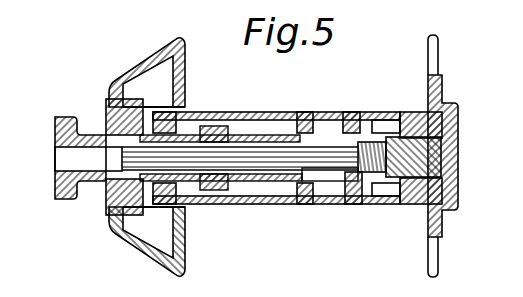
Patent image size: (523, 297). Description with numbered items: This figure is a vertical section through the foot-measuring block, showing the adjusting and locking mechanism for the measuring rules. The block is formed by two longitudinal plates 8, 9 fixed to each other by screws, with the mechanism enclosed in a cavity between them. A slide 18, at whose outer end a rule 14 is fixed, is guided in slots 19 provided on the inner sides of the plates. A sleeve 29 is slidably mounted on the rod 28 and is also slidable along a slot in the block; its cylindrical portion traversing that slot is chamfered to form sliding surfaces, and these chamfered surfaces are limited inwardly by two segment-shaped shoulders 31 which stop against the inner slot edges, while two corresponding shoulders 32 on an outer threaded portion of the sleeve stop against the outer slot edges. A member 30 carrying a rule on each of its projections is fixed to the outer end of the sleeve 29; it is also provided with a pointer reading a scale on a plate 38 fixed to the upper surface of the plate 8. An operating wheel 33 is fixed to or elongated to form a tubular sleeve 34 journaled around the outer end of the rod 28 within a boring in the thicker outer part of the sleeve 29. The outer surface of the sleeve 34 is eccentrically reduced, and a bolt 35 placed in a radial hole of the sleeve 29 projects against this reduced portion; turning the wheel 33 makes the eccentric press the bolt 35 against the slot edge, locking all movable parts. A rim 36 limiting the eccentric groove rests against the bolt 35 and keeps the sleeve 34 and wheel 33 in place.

The longitudinal plate 8 is at (273, 115).
The longitudinal plate 9 is at (301, 184).
The rule 14 is at (441, 253).
The slide 18 is at (394, 136).
The slots 19 is at (421, 194).
The rod 28 is at (337, 160).
The sleeve 29 is at (306, 117).
The member 30 is at (122, 241).
The segment-shaped shoulders 31 is at (218, 114).
The shoulders 32 is at (110, 206).
The operating wheel 33 is at (56, 134).
The tubular sleeve 34 is at (118, 127).
The bolt 35 is at (190, 192).
The rim 36 is at (198, 130).
The plate 38 is at (239, 202).